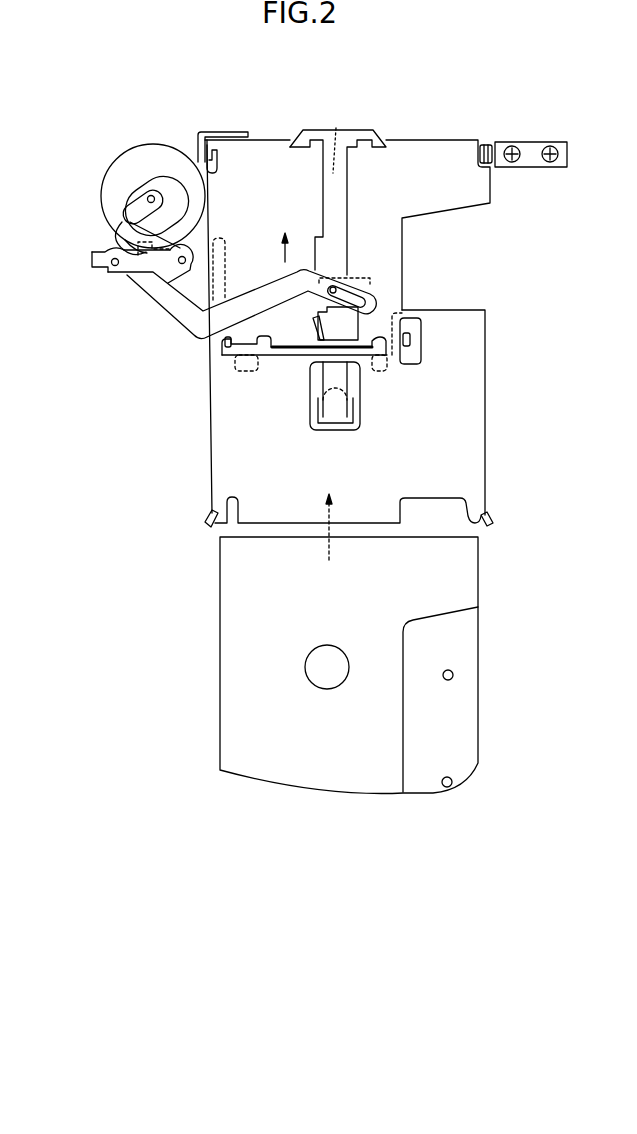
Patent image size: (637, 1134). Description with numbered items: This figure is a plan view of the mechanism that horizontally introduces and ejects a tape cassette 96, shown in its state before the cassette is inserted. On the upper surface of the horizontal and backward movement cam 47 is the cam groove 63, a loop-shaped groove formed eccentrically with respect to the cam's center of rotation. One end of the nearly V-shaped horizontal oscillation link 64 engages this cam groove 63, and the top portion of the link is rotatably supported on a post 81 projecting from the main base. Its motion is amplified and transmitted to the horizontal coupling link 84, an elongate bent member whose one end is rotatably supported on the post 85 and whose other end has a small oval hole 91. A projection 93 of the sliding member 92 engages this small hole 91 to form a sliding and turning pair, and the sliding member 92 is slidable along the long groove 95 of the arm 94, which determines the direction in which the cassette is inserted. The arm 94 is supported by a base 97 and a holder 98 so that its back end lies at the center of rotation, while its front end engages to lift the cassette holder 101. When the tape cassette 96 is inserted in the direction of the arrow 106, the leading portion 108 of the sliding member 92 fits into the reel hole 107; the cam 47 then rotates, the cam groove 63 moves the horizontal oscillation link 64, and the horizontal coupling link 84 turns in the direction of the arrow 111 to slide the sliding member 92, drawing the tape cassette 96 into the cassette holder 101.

The horizontal and backward movement cam 47 is at (138, 147).
The cam groove 63 is at (117, 196).
The horizontal oscillation link 64 is at (120, 243).
The post 81 is at (178, 265).
The horizontal coupling link 84 is at (187, 320).
The post 85 is at (112, 265).
The small oval hole 91 is at (366, 300).
The sliding member 92 is at (348, 330).
The projection 93 is at (355, 302).
The arm 94 is at (423, 150).
The long groove 95 is at (336, 128).
The tape cassette 96 is at (462, 643).
The base 97 is at (220, 128).
The holder 98 is at (533, 140).
The cassette holder 101 is at (460, 424).
The arrow 106 is at (330, 556).
The reel hole 107 is at (337, 647).
The leading portion 108 is at (338, 413).
The arrow 111 is at (283, 262).